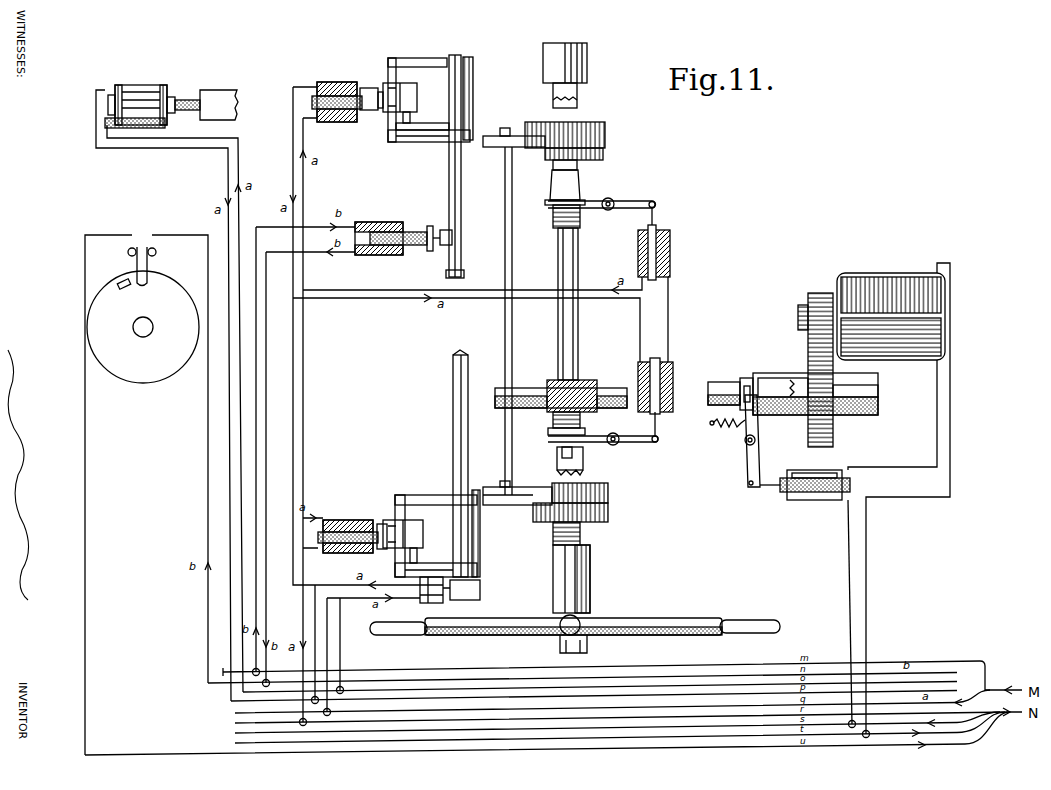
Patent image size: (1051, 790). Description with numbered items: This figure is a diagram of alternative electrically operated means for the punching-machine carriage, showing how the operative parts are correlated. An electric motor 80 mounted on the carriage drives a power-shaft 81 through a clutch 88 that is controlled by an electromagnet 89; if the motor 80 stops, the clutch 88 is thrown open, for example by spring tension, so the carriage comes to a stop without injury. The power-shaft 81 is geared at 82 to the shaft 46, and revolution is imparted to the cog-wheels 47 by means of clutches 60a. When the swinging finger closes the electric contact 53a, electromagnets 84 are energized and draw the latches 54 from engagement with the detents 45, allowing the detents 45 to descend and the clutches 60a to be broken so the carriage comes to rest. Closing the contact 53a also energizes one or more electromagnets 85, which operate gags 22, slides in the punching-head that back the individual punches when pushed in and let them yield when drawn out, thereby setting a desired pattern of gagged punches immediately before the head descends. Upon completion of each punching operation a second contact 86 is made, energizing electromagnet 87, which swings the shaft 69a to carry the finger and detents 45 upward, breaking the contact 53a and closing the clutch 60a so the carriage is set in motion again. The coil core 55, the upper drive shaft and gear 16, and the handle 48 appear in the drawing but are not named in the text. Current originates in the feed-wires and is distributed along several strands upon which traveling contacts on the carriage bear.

The electromagnet 85 is at (140, 85).
The gag 22 is at (217, 90).
The second contact 86 is at (150, 276).
The electromagnet 84 is at (328, 82).
The coil core 55 is at (352, 82).
The latch 54 is at (372, 115).
The detent 45 is at (418, 97).
The electric contact 53a is at (482, 586).
The shaft 69a is at (452, 395).
The electromagnet 87 is at (373, 222).
The drive shaft and gear 16 is at (583, 106).
The shaft 46 is at (557, 260).
The gearing 82 is at (585, 380).
The clutch 60a is at (585, 457).
The cog-wheel 47 is at (609, 503).
The hand wheel / handle 48 is at (638, 618).
The electric motor 80 is at (880, 283).
The clutch 88 is at (765, 375).
The power-shaft 81 is at (720, 388).
The electromagnet 89 is at (808, 500).